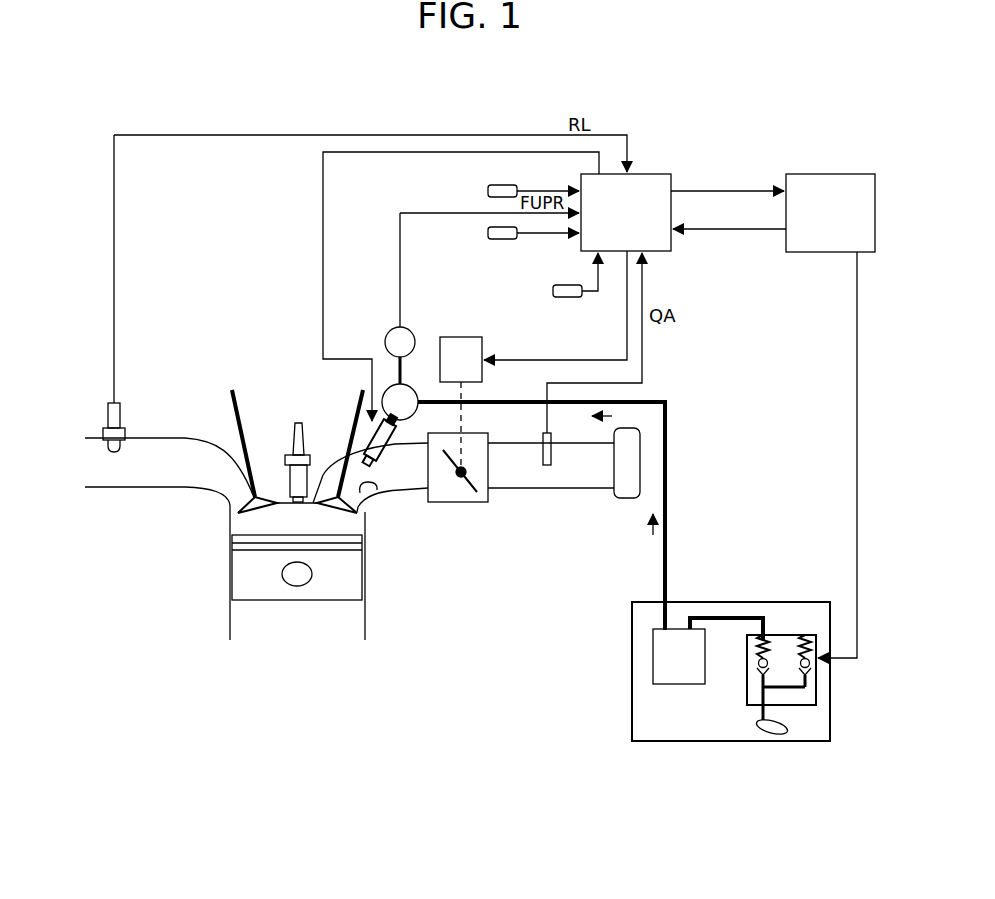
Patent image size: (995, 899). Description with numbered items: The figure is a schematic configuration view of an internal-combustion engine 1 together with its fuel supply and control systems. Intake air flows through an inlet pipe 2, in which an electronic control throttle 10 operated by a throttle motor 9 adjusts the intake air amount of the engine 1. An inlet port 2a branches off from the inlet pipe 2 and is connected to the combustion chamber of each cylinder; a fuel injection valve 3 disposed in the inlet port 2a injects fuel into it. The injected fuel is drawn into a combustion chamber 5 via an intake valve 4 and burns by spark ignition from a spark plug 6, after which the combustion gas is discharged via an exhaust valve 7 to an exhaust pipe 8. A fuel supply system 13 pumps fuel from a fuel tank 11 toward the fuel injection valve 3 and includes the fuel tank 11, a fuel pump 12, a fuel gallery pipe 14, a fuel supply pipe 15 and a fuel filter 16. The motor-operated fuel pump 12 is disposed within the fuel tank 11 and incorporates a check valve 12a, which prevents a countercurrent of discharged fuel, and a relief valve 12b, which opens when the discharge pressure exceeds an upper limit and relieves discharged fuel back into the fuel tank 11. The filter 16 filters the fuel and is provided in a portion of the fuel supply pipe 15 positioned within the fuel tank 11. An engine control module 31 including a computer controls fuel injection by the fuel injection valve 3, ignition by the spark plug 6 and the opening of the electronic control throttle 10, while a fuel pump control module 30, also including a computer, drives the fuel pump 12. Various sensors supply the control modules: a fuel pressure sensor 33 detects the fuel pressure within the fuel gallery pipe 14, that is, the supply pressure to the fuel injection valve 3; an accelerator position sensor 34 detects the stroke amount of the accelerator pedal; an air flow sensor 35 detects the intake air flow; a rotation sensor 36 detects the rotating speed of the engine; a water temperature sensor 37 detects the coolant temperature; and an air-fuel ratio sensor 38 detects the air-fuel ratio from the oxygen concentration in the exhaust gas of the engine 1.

The internal-combustion engine 1 is at (246, 342).
The inlet pipe 2 is at (562, 476).
The inlet port 2a is at (375, 495).
The fuel injection valve 3 is at (365, 485).
The intake valve 4 is at (330, 500).
The combustion chamber 5 is at (250, 522).
The spark plug 6 is at (297, 447).
The exhaust valve 7 is at (245, 505).
The exhaust pipe 8 is at (185, 445).
The throttle motor 9 is at (465, 338).
The electronic control throttle 10 is at (476, 492).
The fuel tank 11 is at (700, 602).
The fuel pump 12 is at (779, 635).
The check valve 12a is at (756, 672).
The relief valve 12b is at (813, 672).
The fuel supply system 13 is at (765, 497).
The fuel gallery pipe 14 is at (390, 397).
The fuel supply pipe 15 is at (666, 400).
The fuel filter 16 is at (653, 672).
The fuel pump control module (FPCM) 30 is at (832, 173).
The engine control module (ECM) 31 is at (666, 175).
The fuel pressure sensor 33 is at (398, 330).
The accelerator position sensor 34 is at (488, 192).
The air flow sensor 35 is at (543, 450).
The rotation sensor 36 is at (505, 239).
The water temperature sensor 37 is at (548, 299).
The air-fuel ratio sensor 38 is at (118, 410).